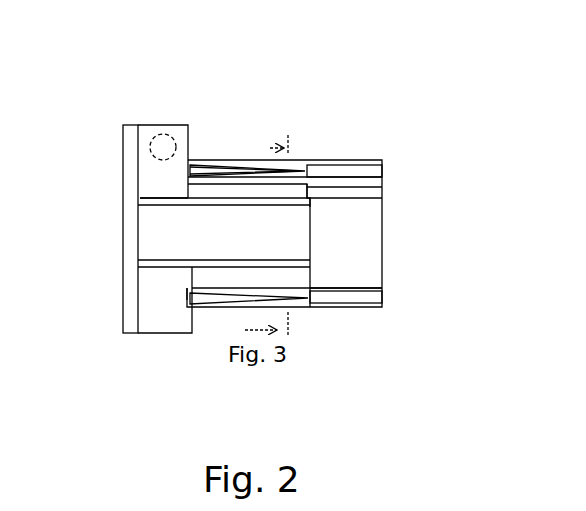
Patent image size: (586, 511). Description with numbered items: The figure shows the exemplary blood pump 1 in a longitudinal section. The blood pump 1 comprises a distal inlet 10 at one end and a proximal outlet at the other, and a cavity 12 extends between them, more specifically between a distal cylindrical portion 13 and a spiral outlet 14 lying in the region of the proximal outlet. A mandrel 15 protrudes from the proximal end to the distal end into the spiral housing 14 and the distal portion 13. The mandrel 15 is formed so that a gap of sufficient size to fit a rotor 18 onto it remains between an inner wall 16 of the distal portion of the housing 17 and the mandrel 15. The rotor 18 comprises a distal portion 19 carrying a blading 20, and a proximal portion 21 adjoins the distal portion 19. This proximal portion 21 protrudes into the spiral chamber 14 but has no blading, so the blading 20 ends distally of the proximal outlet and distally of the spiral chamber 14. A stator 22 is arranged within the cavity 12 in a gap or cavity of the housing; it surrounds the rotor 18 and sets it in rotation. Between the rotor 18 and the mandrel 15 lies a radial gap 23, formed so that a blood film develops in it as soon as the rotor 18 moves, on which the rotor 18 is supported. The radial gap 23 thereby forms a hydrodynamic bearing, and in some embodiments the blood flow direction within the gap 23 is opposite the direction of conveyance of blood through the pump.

The blood pump 1 is at (105, 133).
The distal inlet 10 is at (398, 216).
The cavity 12 is at (160, 134).
The distal cylindrical portion 13 is at (266, 148).
The spiral outlet 14 is at (160, 345).
The mandrel 15 is at (178, 221).
The inner wall 16 is at (372, 288).
The housing 17 is at (332, 142).
The rotor 18 is at (298, 273).
The distal portion 19 is at (380, 188).
The blading 20 is at (247, 192).
The proximal portion 21 is at (158, 197).
The stator 22 is at (212, 170).
The radial gap 23 is at (315, 206).